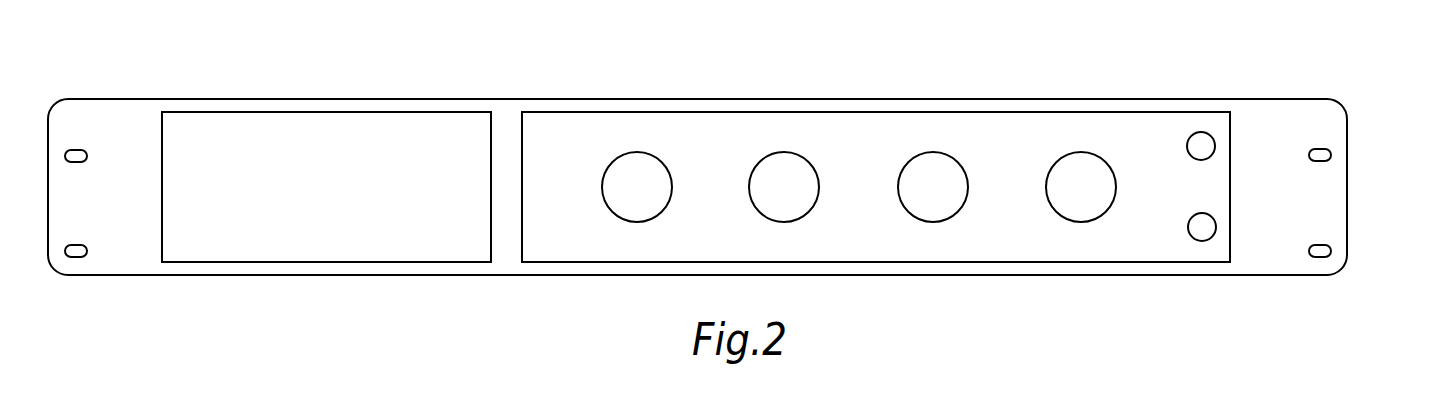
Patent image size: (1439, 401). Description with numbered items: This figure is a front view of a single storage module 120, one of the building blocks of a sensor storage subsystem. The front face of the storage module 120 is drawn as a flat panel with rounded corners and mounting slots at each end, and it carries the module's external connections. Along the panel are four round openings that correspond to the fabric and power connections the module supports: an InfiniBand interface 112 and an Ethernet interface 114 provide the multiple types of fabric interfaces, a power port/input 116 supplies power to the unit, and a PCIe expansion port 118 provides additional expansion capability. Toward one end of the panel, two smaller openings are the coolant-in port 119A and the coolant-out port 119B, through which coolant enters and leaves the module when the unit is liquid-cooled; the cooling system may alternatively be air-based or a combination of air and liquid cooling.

The InfiniBand interface 112 is at (637, 185).
The Ethernet interface 114 is at (784, 185).
The power port/input 116 is at (933, 185).
The PCIe expansion port 118 is at (1081, 185).
The coolant-in port 119A is at (1201, 146).
The coolant-out port 119B is at (1202, 227).
The storage module 120 is at (1342, 73).